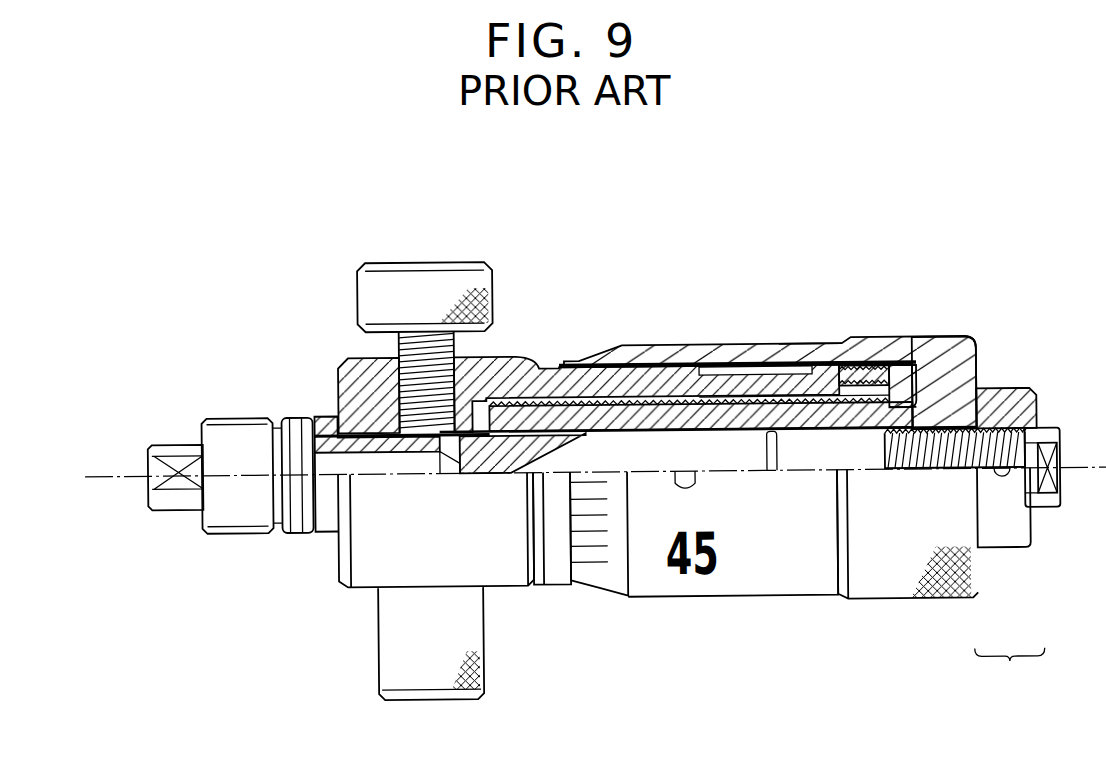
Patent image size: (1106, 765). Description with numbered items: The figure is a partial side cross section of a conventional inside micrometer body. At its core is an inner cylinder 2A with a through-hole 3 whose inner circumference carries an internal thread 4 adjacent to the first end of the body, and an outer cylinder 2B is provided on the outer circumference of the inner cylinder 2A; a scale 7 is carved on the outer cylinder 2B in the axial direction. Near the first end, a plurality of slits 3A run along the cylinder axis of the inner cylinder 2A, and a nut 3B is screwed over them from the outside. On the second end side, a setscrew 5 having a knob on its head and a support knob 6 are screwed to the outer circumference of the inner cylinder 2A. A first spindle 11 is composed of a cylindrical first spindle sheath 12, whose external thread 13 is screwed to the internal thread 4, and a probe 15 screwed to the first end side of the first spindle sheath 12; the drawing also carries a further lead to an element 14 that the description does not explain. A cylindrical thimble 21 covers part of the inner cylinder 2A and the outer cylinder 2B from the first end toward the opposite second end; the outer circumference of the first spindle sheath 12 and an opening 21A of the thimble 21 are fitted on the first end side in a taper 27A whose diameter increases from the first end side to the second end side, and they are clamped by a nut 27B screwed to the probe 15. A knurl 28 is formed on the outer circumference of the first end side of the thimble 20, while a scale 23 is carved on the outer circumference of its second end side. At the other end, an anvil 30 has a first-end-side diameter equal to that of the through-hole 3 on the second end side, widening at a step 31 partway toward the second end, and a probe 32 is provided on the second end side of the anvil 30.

The inner cylinder 2A is at (522, 379).
The outer cylinder 2B is at (607, 366).
The through-hole 3 is at (492, 358).
The slits 3A is at (803, 397).
The nut 3B is at (860, 374).
The internal thread 4 is at (755, 401).
The setscrew 5 is at (430, 283).
The support knob 6 is at (419, 668).
The scale 7 is at (553, 493).
The first spindle 11 is at (1010, 671).
The first spindle sheath 12 is at (982, 472).
The external thread 13 is at (740, 409).
The outer sleeve 14 is at (802, 430).
The probe 15 is at (1035, 504).
The thimble 20 is at (808, 354).
The thimble 21 is at (912, 366).
The opening 21A is at (938, 403).
The scale 23 is at (592, 532).
The taper 27A is at (968, 340).
The nut 27B is at (1020, 392).
The knurl 28 is at (898, 603).
The anvil 30 is at (235, 425).
The step 31 is at (305, 507).
The probe 32 is at (157, 469).